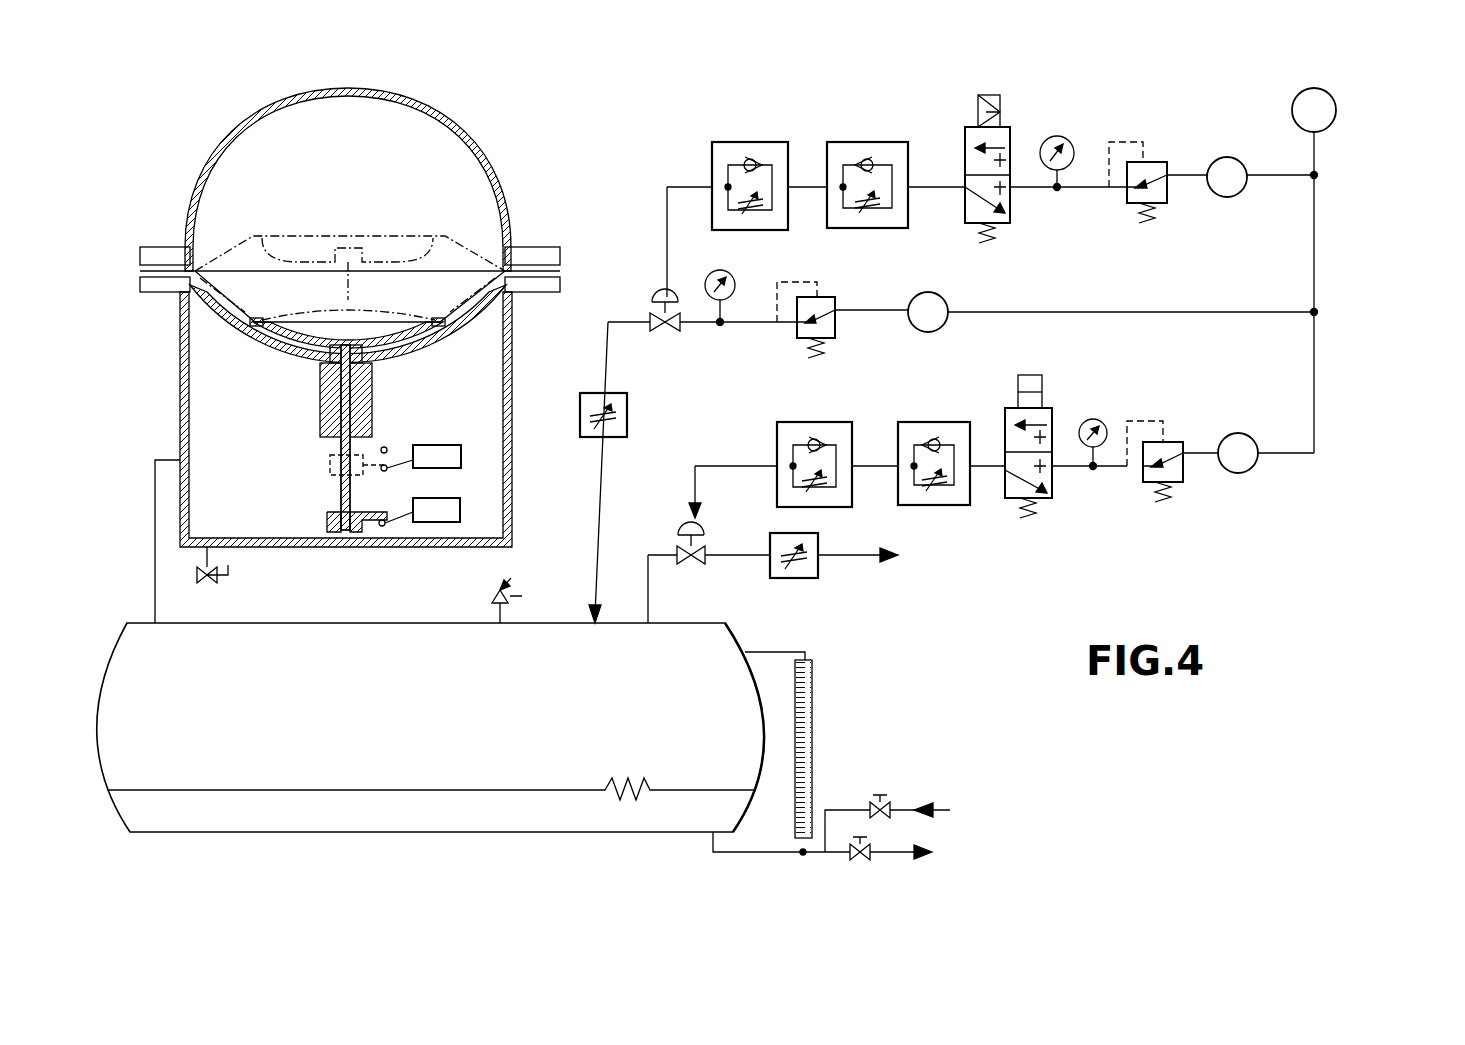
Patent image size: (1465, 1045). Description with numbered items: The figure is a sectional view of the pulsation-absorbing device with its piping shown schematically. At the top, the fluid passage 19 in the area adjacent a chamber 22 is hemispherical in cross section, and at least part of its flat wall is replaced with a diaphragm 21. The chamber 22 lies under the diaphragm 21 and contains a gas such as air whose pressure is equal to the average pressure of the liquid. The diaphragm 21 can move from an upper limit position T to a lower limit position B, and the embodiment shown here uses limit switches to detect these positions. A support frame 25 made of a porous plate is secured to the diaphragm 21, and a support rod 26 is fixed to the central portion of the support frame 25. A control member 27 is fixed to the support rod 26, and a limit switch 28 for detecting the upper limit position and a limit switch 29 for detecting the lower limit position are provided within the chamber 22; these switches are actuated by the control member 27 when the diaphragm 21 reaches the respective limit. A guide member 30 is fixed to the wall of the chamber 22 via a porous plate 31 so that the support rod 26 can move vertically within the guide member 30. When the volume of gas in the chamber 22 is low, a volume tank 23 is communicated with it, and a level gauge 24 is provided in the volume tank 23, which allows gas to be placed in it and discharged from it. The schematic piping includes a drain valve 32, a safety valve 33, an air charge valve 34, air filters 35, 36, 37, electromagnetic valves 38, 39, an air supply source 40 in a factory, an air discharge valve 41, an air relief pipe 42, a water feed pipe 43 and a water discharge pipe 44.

The fluid passage 19 is at (390, 113).
The diaphragm 21 is at (243, 237).
The upper limit position T is at (352, 219).
The lower limit position B is at (403, 310).
The chamber 22 is at (512, 352).
The volume tank 23 is at (400, 625).
The level gauge 24 is at (812, 695).
The support frame 25 is at (262, 355).
The support rod 26 is at (340, 490).
The control member 27 is at (328, 467).
The limit switch 28 is at (442, 446).
The limit switch 29 is at (443, 504).
The guide member 30 is at (320, 423).
The porous plate 31 is at (463, 340).
The drain valve 32 is at (208, 585).
The safety valve 33 is at (511, 578).
The air charge valve 34 is at (668, 333).
The air filter 35 is at (932, 332).
The air filter 36 is at (1230, 193).
The air filter 37 is at (1238, 468).
The electromagnetic valve 38 is at (1008, 127).
The electromagnetic valve 39 is at (1050, 405).
The air supply source 40 is at (1312, 92).
The air discharge valve 41 is at (695, 562).
The air relief pipe 42 is at (848, 560).
The water feed pipe 43 is at (905, 800).
The water discharge pipe 44 is at (885, 852).